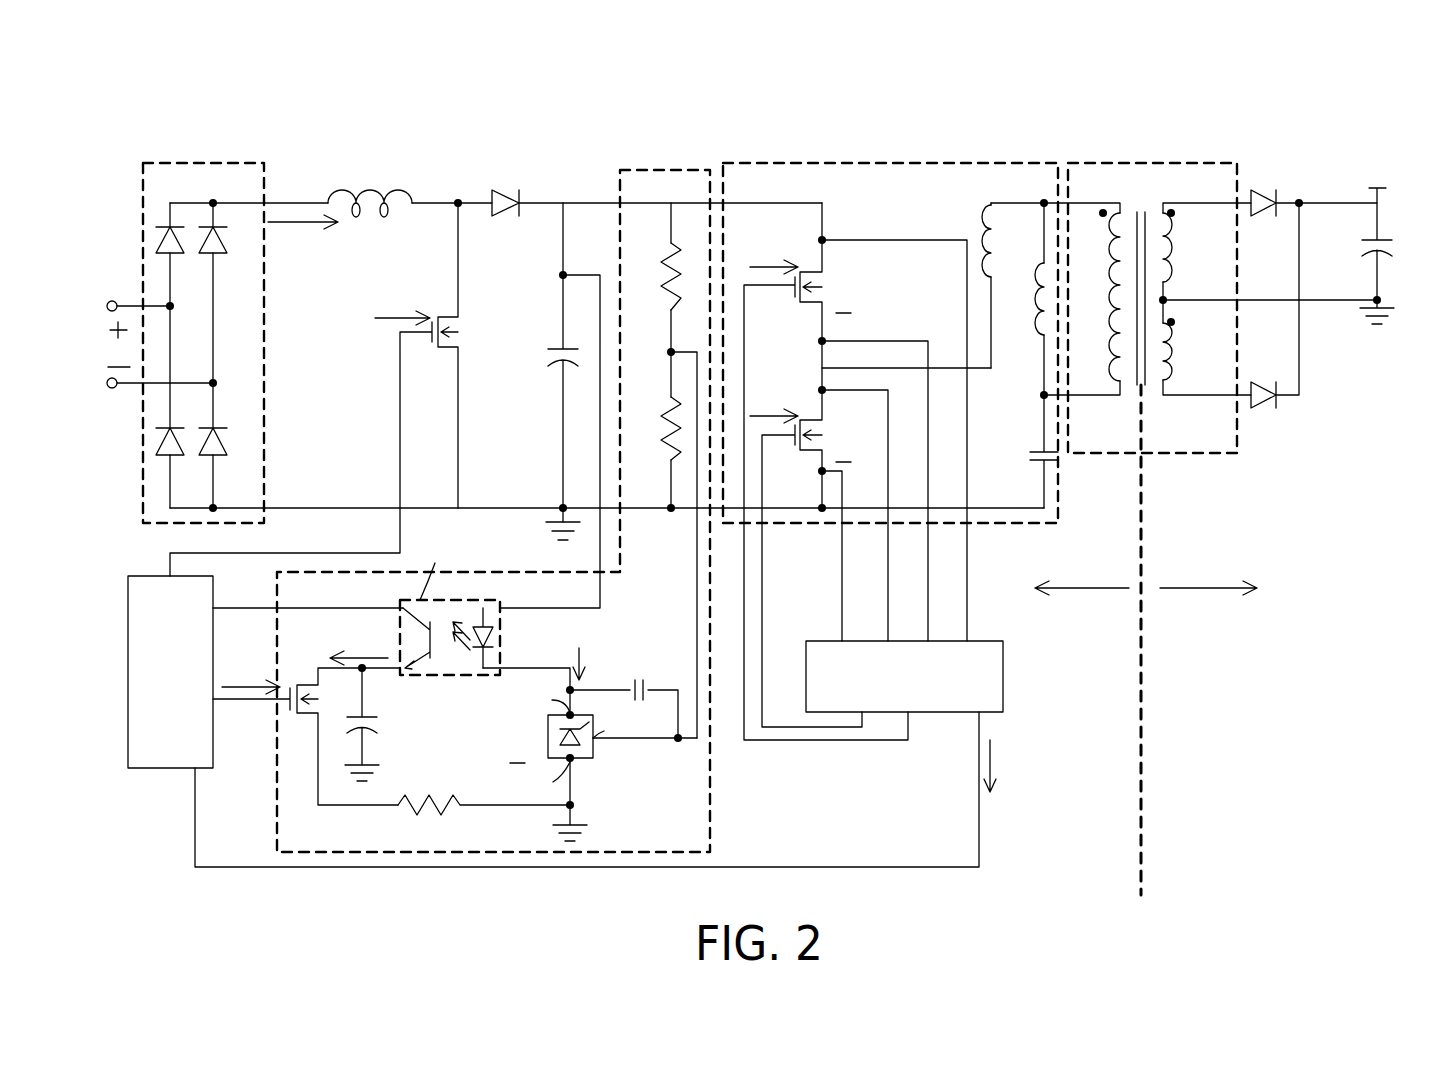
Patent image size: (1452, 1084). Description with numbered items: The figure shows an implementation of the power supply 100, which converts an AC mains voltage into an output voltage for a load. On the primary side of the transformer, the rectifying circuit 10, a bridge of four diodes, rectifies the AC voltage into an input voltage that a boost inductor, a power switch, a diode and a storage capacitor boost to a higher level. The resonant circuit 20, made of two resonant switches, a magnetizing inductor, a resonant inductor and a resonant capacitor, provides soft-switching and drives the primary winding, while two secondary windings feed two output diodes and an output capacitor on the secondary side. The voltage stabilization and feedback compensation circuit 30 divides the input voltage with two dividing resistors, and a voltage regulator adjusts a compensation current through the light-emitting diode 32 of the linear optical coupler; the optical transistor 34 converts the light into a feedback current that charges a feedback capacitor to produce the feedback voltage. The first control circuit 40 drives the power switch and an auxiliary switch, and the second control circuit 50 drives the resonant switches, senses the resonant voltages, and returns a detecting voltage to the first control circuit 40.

The power supply 100 is at (1283, 134).
The rectifying circuit 10 is at (212, 163).
The resonant circuit 20 is at (893, 163).
The voltage stabilization and feedback compensation circuit 30 is at (667, 170).
The first control circuit 40 is at (173, 675).
The second control circuit 50 is at (1003, 677).
The light-emitting diode 32 is at (474, 660).
The optical transistor 34 is at (450, 621).